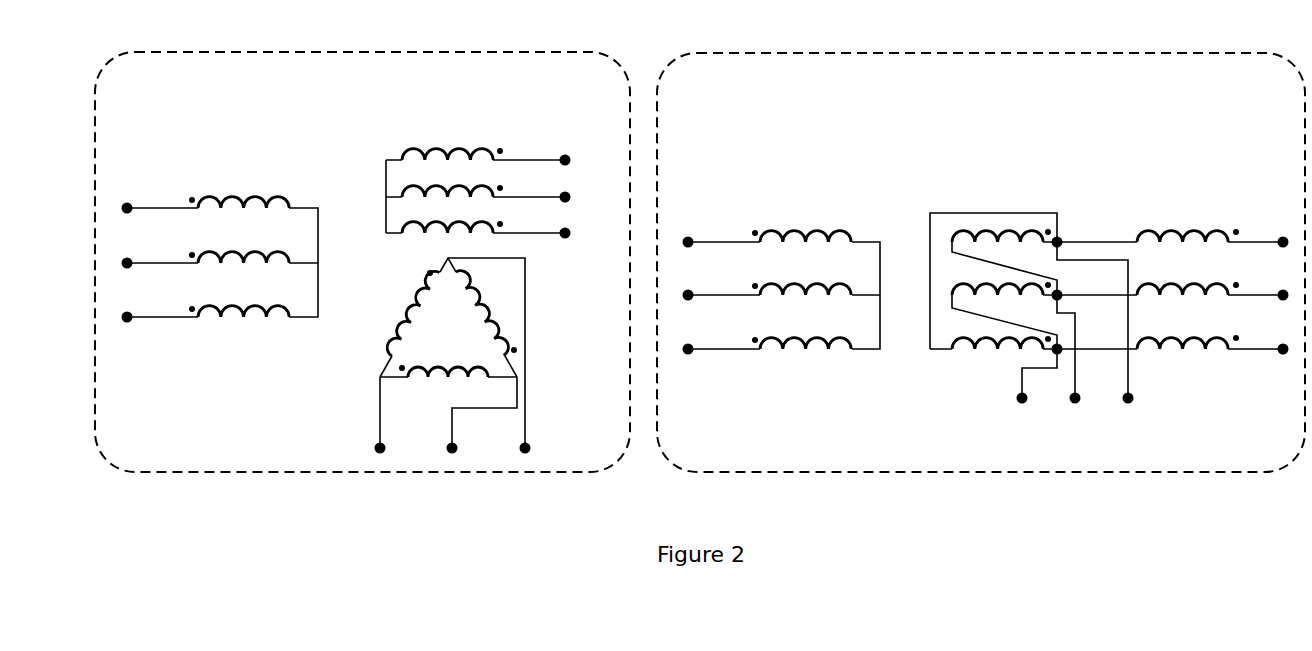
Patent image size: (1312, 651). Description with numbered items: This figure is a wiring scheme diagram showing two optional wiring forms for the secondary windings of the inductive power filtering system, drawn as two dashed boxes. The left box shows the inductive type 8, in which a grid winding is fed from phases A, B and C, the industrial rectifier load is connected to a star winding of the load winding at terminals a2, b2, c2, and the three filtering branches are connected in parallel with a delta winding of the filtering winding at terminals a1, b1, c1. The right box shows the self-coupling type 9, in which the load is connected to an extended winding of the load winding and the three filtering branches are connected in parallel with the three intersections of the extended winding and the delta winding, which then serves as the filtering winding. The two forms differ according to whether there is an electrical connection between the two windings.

The inductive type for secondary windings 8 is at (362, 262).
The self-coupling type for secondary windings 9 is at (981, 262).
The filtering winding terminal a1 is at (369, 417).
The filtering winding terminal b1 is at (469, 417).
The filtering winding terminal c1 is at (489, 358).
The load winding terminal a2 is at (546, 160).
The load winding terminal b2 is at (546, 197).
The load winding terminal c2 is at (545, 233).